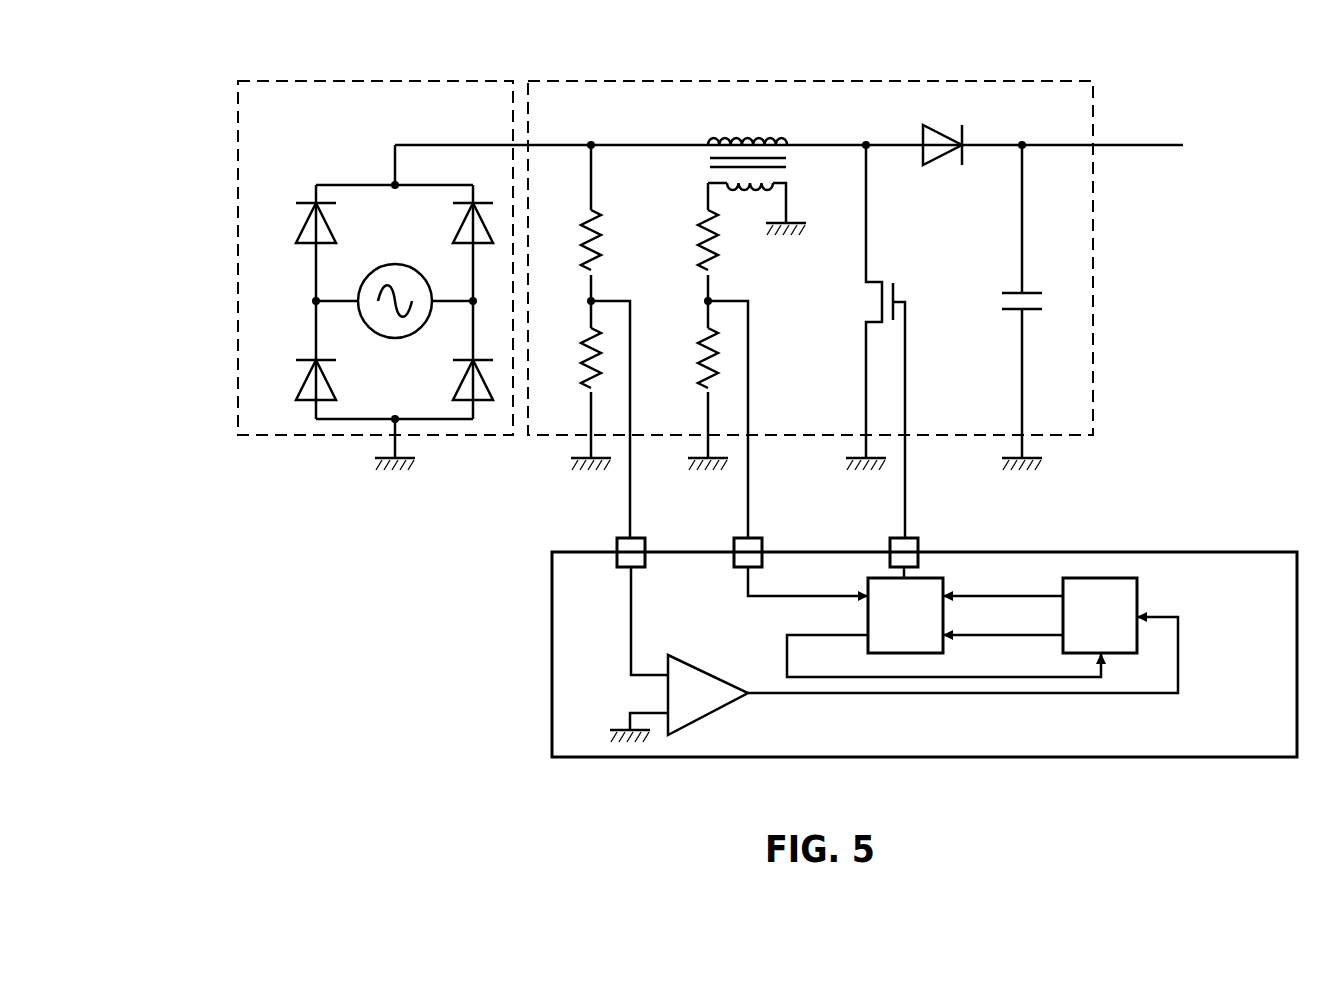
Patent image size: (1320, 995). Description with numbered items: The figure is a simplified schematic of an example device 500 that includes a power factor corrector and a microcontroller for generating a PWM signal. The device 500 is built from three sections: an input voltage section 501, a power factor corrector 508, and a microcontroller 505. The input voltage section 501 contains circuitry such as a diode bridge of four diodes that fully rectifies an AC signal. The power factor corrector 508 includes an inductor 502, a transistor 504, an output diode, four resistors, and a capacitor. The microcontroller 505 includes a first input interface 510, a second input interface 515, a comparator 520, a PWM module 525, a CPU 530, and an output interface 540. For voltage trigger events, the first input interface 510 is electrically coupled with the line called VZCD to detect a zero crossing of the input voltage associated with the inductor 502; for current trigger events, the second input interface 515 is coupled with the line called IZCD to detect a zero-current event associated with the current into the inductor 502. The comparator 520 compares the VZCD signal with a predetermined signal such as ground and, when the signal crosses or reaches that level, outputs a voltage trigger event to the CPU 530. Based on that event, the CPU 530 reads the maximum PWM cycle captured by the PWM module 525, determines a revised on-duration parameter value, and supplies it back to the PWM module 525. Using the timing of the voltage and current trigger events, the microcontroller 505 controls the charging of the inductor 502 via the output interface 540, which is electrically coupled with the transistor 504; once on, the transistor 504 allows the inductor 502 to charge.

The device 500 is at (345, 630).
The input voltage section 501 is at (393, 81).
The inductor 502 is at (722, 141).
The transistor 504 is at (893, 290).
The microcontroller 505 is at (1185, 552).
The power factor corrector 508 is at (878, 81).
The first input interface 510 is at (617, 545).
The second input interface 515 is at (762, 541).
The comparator 520 is at (712, 714).
The PWM module 525 is at (943, 578).
The CPU 530 is at (1137, 600).
The output interface 540 is at (918, 540).